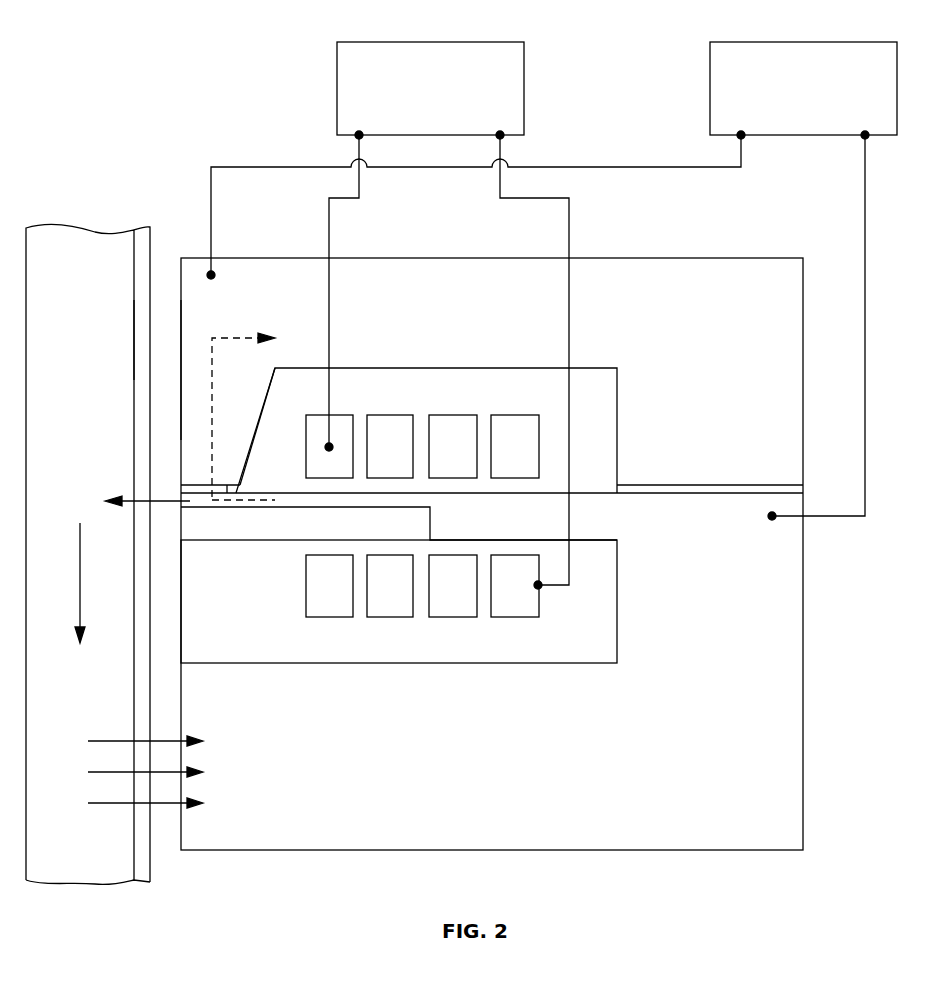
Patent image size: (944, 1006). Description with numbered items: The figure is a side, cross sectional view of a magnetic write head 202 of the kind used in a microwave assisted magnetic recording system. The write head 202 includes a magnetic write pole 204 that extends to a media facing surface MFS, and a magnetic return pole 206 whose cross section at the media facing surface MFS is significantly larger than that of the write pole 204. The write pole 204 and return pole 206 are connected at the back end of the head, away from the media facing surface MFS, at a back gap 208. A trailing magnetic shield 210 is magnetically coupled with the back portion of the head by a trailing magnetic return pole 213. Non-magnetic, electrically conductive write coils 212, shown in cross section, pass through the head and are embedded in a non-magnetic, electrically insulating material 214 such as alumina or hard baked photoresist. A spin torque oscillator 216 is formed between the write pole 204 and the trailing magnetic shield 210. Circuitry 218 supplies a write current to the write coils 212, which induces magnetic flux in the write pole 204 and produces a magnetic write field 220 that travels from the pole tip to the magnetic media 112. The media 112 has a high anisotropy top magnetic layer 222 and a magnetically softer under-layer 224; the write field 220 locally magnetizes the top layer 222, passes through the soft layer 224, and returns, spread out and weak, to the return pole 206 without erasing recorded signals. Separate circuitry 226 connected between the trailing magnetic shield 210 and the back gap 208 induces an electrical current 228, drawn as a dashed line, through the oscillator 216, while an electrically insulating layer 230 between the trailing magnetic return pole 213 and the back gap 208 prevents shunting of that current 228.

The magnetic media 112 is at (97, 231).
The magnetically softer under-layer 224 is at (100, 295).
The high anisotropy top magnetic layer 222 is at (140, 339).
The media facing surface MFS is at (181, 390).
The magnetic write head 202 is at (644, 851).
The magnetic write pole 204 is at (257, 507).
The magnetic return pole 206 is at (422, 758).
The back gap 208 is at (703, 636).
The trailing magnetic shield 210 is at (235, 420).
The write coils 212 is at (335, 415).
The trailing magnetic return pole 213 is at (463, 307).
The non-magnetic, electrically insulating material 214 is at (593, 400).
The spin torque oscillator 216 is at (227, 492).
The circuitry 218 is at (427, 42).
The magnetic write field 220 is at (167, 500).
The circuitry 226 is at (780, 42).
The electrical current 228 is at (215, 338).
The electrically insulating layer 230 is at (668, 485).